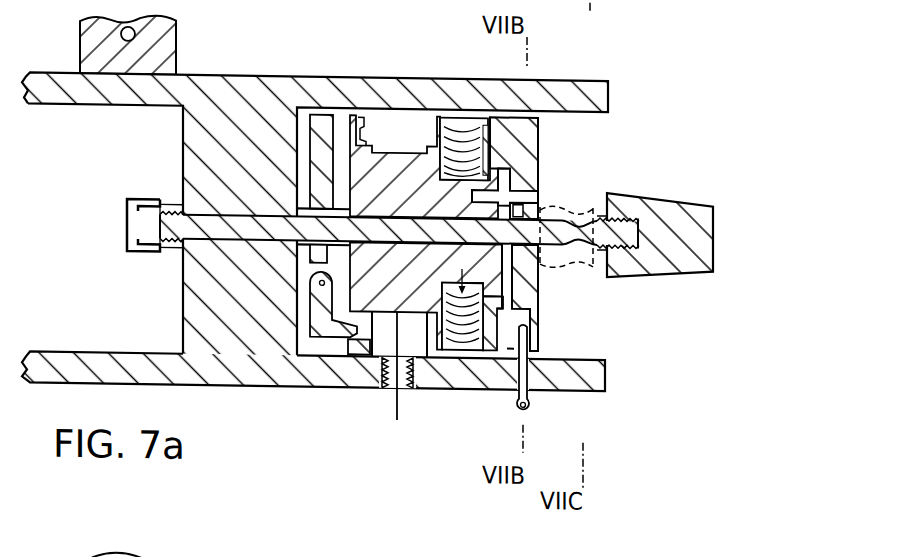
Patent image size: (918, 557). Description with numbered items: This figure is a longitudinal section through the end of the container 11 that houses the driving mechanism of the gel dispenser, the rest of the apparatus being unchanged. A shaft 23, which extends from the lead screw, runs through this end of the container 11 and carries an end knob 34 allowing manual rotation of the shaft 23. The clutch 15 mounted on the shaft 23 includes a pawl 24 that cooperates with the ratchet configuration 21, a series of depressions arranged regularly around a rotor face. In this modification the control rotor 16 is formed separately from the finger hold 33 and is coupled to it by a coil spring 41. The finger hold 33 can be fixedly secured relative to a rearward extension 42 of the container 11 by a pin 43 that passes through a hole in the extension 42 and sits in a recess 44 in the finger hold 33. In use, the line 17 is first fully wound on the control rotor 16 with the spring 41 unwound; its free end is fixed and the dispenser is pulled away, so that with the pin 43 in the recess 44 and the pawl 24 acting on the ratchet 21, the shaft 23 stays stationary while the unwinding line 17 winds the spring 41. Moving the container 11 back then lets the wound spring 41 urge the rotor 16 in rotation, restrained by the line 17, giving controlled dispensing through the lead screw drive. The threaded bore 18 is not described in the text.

The container 11 is at (185, 91).
The clutch 15 is at (305, 57).
The control rotor 16 is at (421, 50).
The line 17 is at (397, 419).
The threaded bore 18 is at (405, 384).
The ratchet configuration 21 is at (358, 342).
The shaft 23 is at (204, 230).
The pawl 24 is at (320, 334).
The finger hold 33 is at (530, 146).
The end knob 34 is at (665, 221).
The coil spring 41 is at (466, 127).
The rearward extension 42 is at (583, 379).
The pin 43 is at (517, 408).
The recess 44 is at (512, 325).